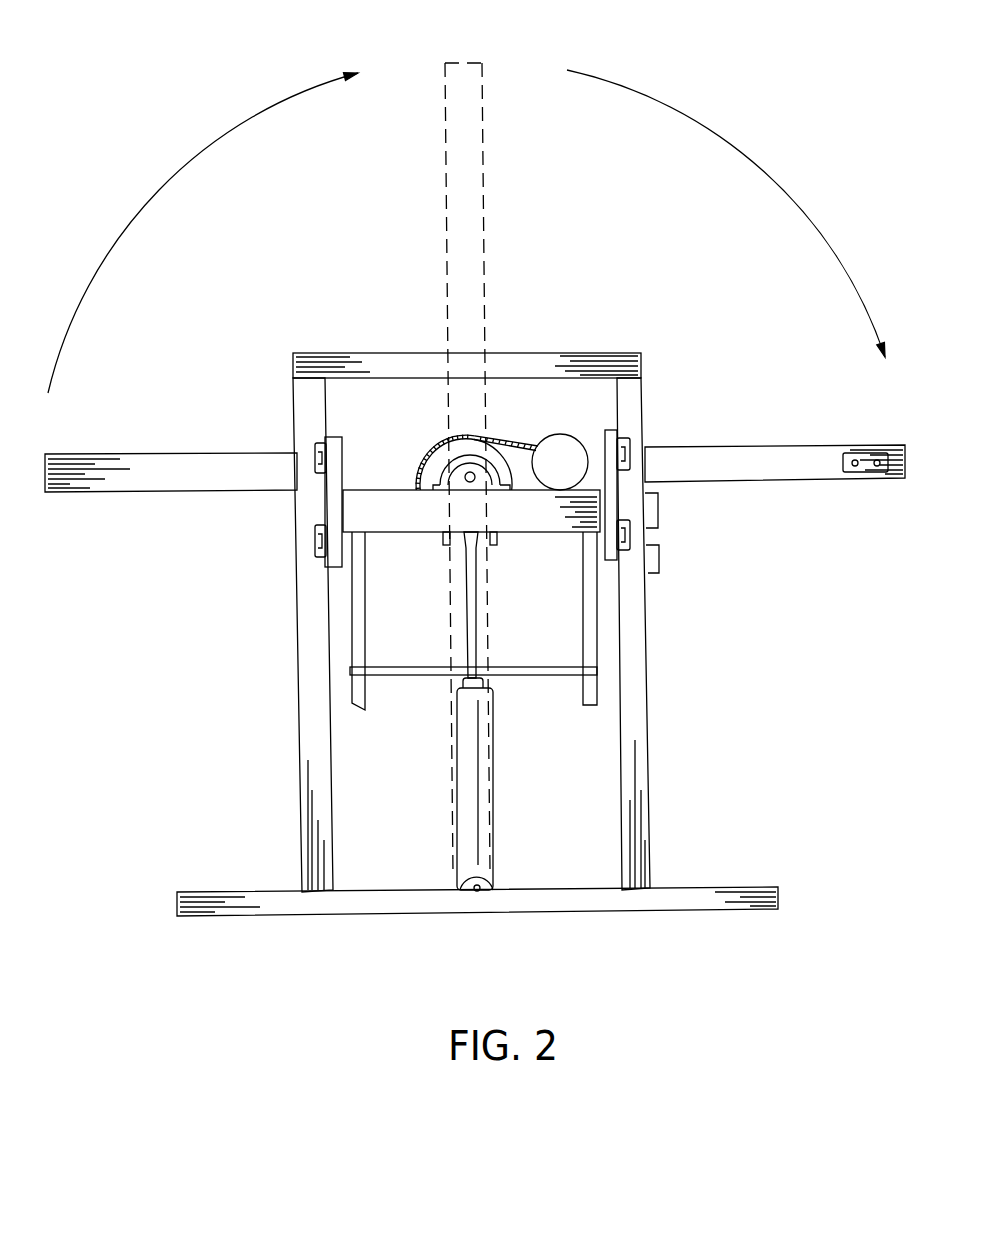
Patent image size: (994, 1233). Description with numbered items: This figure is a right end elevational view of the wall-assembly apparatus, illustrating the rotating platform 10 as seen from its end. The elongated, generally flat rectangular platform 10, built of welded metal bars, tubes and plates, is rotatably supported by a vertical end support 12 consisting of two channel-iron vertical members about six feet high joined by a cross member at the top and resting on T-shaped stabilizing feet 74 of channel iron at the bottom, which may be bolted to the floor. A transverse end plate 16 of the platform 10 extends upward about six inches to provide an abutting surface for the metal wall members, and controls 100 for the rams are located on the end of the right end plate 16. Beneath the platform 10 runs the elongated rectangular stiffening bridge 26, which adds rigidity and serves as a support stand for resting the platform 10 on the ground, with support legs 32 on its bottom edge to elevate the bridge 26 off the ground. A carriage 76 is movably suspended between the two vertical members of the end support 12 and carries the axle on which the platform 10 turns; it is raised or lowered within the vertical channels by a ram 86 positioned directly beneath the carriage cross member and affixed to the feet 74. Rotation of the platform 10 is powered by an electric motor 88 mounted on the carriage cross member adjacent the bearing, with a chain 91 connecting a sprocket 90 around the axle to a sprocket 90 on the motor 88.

The platform 10 is at (581, 298).
The vertical end support 12 is at (635, 704).
The end plate 16 is at (118, 472).
The stiffening bridge 26 is at (540, 676).
The support leg 32 is at (362, 706).
The stabilizing foot 74 is at (733, 900).
The carriage 76 is at (400, 497).
The ram 86 is at (477, 890).
The electric motor 88 is at (570, 468).
The sprocket 90 is at (443, 462).
The chain 91 is at (510, 440).
The controls 100 is at (867, 473).